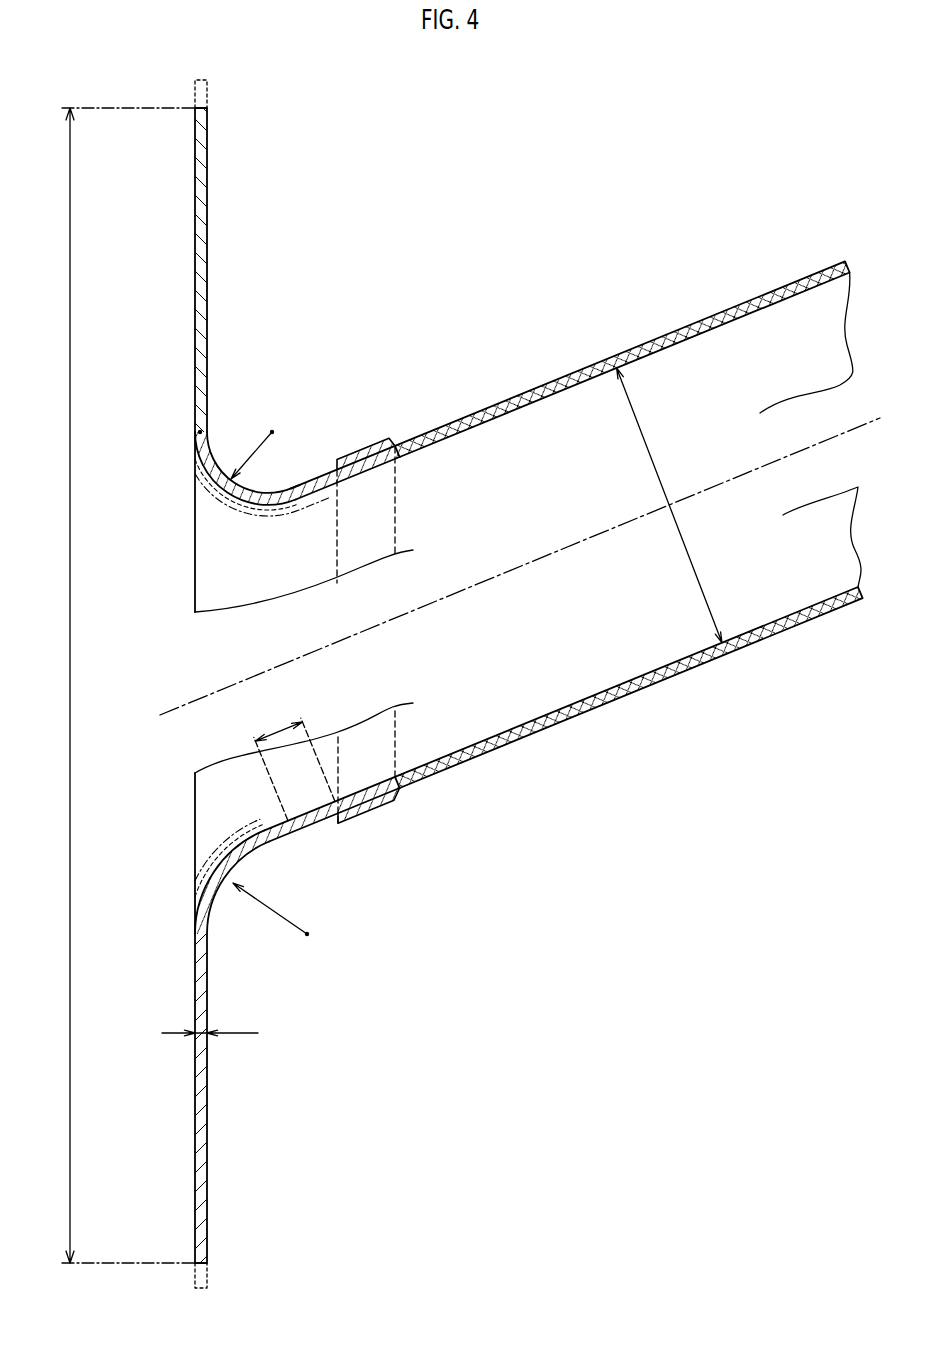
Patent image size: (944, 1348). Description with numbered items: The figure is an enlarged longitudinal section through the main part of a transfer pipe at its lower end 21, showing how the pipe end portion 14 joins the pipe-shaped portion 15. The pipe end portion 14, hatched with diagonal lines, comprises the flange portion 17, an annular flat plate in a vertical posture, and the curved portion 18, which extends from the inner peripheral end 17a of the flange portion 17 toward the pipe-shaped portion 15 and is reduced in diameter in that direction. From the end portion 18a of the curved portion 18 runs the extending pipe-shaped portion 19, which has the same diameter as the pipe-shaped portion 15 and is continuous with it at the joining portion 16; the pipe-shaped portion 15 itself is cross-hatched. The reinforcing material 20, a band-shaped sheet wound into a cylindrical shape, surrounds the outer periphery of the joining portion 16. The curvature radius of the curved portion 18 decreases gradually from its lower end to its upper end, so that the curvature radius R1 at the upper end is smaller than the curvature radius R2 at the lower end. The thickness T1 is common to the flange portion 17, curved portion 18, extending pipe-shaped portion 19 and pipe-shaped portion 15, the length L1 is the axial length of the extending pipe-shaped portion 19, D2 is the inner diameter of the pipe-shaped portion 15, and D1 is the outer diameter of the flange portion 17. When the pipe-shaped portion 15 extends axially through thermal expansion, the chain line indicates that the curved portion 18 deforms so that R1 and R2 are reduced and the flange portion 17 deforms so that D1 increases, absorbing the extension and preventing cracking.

The pipe end portion 14 is at (502, 684).
The pipe-shaped portion 15 is at (699, 310).
The joining portion 16 is at (372, 473).
The flange portion 17 is at (195, 288).
The inner peripheral end of the flange portion 17a is at (202, 432).
The curved portion 18 is at (227, 493).
The end portion of the curved portion 18a is at (301, 485).
The extending pipe-shaped portion 19 is at (318, 493).
The reinforcing material 20 is at (364, 452).
The lower end 21 is at (184, 830).
The outer diameter of the flange portion D1 is at (117, 685).
The inner diameter of the pipe-shaped portion D2 is at (664, 505).
The curvature radius at the upper end position R1 is at (248, 450).
The curvature radius at the lower end position R2 is at (271, 905).
The length of the extending pipe-shaped portion L1 is at (292, 754).
The thickness T1 is at (210, 1019).